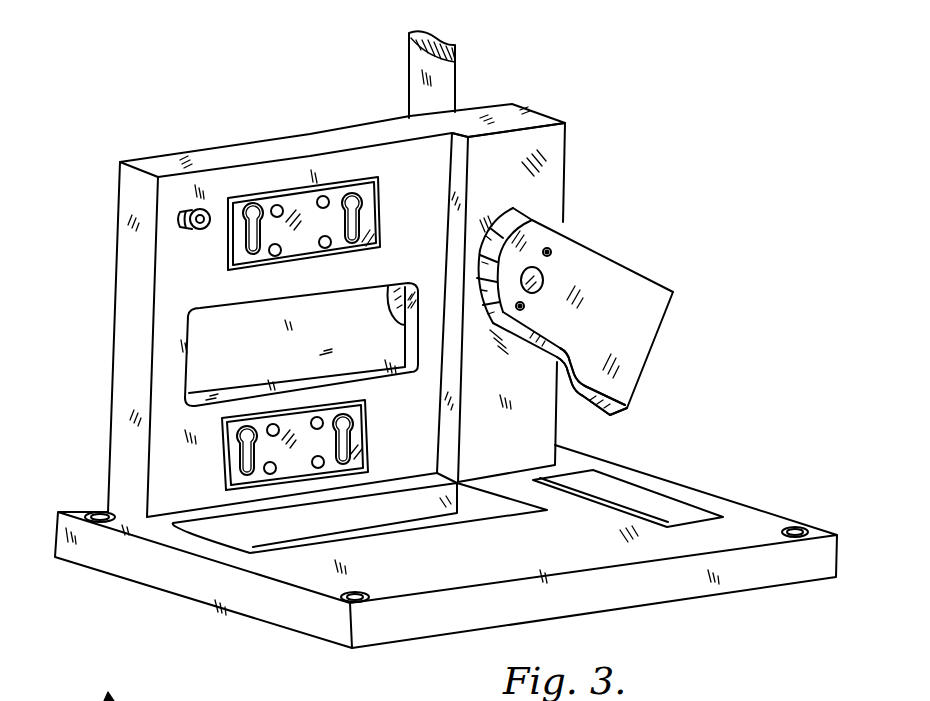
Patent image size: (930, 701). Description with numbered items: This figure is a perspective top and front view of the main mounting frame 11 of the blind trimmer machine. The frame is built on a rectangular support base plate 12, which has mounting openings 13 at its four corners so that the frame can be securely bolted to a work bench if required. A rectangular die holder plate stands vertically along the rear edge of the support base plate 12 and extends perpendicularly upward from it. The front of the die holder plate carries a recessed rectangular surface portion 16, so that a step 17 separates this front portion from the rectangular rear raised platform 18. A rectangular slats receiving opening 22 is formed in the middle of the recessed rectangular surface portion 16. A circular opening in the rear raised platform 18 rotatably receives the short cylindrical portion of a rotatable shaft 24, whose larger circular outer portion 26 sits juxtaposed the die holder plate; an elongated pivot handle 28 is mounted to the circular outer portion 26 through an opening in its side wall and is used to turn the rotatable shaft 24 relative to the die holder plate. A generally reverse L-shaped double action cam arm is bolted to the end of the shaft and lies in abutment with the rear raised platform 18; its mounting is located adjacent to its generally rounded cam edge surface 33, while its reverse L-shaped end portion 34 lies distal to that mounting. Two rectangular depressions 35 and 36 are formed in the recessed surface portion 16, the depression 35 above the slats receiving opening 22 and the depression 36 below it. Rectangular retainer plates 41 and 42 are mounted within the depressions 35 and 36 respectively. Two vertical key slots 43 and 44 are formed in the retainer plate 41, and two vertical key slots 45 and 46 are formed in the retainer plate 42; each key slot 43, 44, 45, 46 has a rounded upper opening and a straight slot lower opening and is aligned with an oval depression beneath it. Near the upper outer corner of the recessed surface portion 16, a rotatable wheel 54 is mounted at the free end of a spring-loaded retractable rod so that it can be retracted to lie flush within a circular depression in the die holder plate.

The main mounting frame 11 is at (548, 109).
The support base plate 12 is at (638, 548).
The mounting openings 13 is at (795, 528).
The recessed rectangular surface portion 16 is at (242, 175).
The step 17 is at (457, 147).
The rectangular rear raised platform 18 is at (550, 150).
The slats receiving opening 22 is at (193, 327).
The rotatable shaft 24 is at (603, 278).
The circular outer portion 26 is at (397, 313).
The pivot handle 28 is at (443, 73).
The rounded cam edge surface 33 is at (503, 247).
The reverse L-shaped end portion 34 is at (620, 398).
The rectangular depression 35 is at (318, 187).
The rectangular depression 36 is at (227, 487).
The retainer plate 41 is at (293, 200).
The retainer plate 42 is at (287, 472).
The vertical key slot 43 is at (243, 203).
The vertical key slot 44 is at (357, 186).
The vertical key slot 45 is at (238, 437).
The vertical key slot 46 is at (350, 434).
The rotatable wheel 54 is at (187, 228).